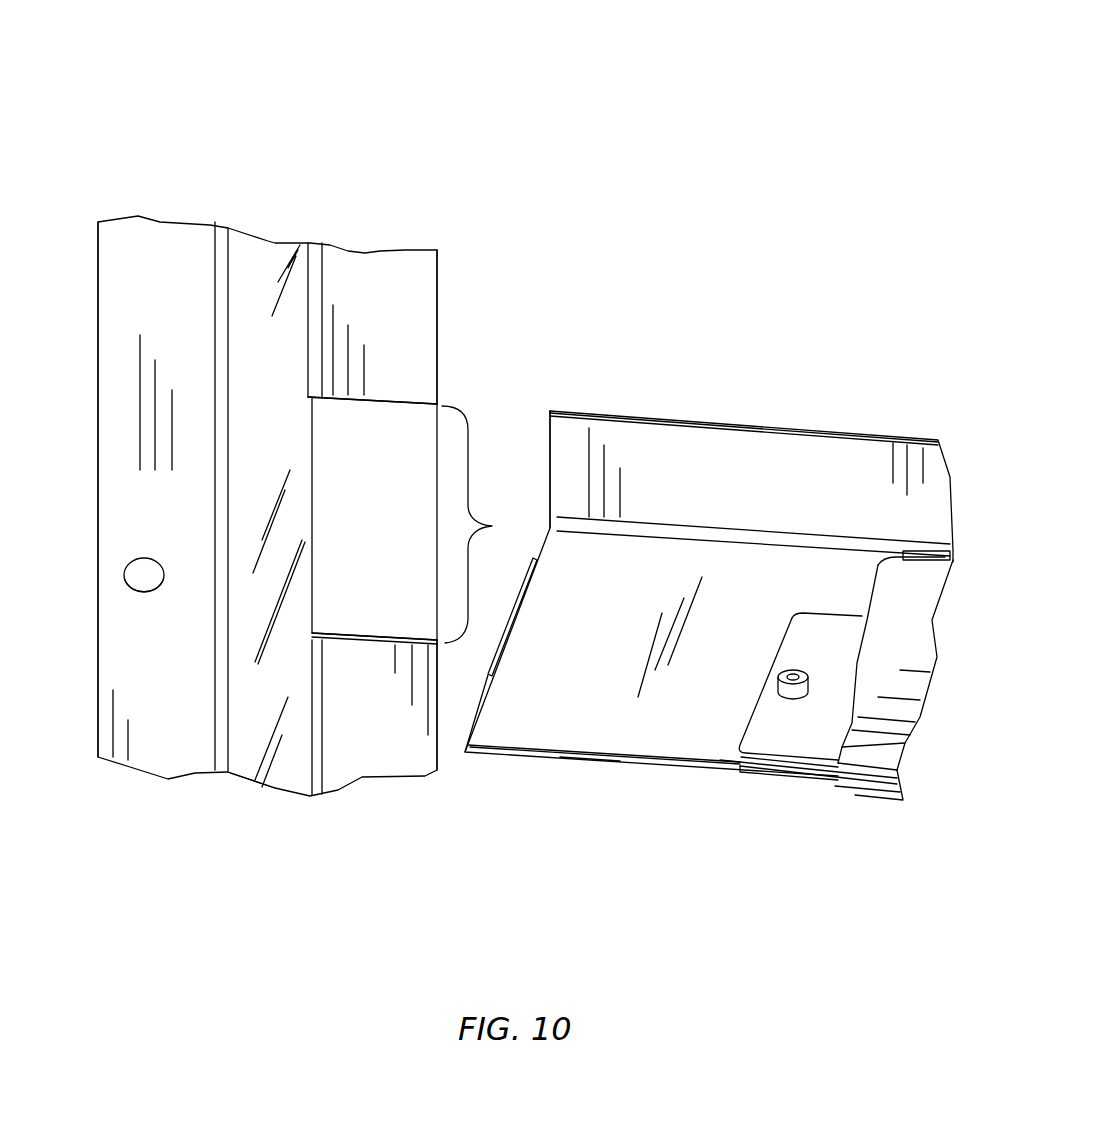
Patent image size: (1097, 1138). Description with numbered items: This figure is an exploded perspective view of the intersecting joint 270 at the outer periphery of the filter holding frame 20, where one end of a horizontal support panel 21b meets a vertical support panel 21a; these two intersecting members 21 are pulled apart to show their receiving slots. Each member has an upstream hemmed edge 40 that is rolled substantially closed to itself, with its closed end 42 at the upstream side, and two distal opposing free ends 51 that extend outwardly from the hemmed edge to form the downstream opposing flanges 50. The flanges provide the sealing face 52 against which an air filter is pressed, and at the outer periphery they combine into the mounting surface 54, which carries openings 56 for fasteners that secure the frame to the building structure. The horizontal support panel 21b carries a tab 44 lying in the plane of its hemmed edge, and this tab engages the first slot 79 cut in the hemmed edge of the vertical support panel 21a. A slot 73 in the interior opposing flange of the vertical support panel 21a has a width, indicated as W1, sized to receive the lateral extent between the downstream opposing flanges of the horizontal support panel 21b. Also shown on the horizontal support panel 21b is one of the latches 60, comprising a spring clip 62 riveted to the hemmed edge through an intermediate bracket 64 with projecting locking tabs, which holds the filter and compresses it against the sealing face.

The filter holding frame 20 is at (515, 466).
The intersecting members 21 is at (515, 490).
The vertical support panel 21a is at (248, 245).
The horizontal support panel 21b is at (647, 733).
The upstream hemmed edge 40 is at (247, 760).
The closed end 42 is at (222, 345).
The tab 44 is at (507, 627).
The downstream opposing flanges 50 is at (130, 497).
The distal opposing free ends 51 is at (97, 390).
The sealing face 52 is at (402, 272).
The mounting surface 54 is at (152, 747).
The openings 56 is at (150, 593).
The latches 60 is at (932, 706).
The spring clip 62 is at (905, 648).
The intermediate bracket 64 is at (822, 633).
The slot 73 is at (492, 430).
The first slot 79 is at (275, 624).
The intersecting joint 270 is at (538, 322).
The width W1 is at (486, 524).